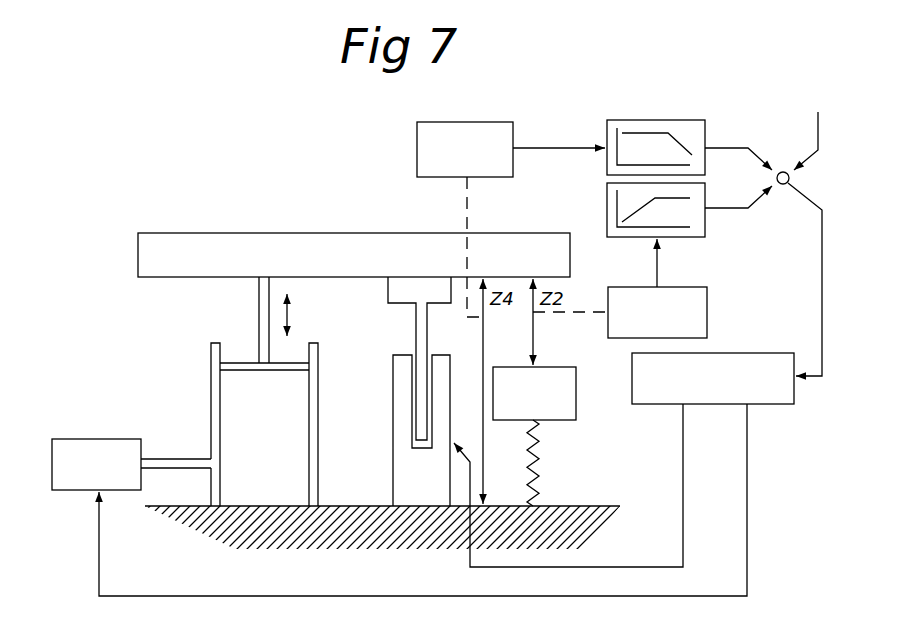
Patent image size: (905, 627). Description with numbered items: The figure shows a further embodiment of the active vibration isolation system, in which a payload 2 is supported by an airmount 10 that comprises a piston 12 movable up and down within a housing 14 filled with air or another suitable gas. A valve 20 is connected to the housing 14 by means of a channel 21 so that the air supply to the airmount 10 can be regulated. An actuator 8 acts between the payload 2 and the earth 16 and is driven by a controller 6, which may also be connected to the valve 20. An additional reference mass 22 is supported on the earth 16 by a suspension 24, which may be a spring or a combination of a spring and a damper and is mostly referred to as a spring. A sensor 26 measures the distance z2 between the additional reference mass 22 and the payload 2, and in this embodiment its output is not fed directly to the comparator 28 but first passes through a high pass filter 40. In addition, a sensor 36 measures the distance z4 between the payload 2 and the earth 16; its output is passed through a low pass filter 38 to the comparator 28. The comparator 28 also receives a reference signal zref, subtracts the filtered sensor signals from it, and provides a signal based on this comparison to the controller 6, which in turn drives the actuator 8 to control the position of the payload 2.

The payload 2 is at (244, 250).
The controller 6 is at (758, 358).
The actuator 8 is at (410, 343).
The airmount 10 is at (310, 318).
The piston 12 is at (246, 371).
The housing 14 is at (288, 448).
The earth 16 is at (582, 516).
The valve 20 is at (62, 491).
The channel 21 is at (199, 426).
The additional reference mass 22 is at (568, 398).
The suspension 24 is at (540, 462).
The sensor 26 is at (620, 294).
The comparator 28 is at (780, 172).
The sensor 36 is at (471, 132).
The low pass filter 38 is at (678, 130).
The high pass filter 40 is at (608, 206).